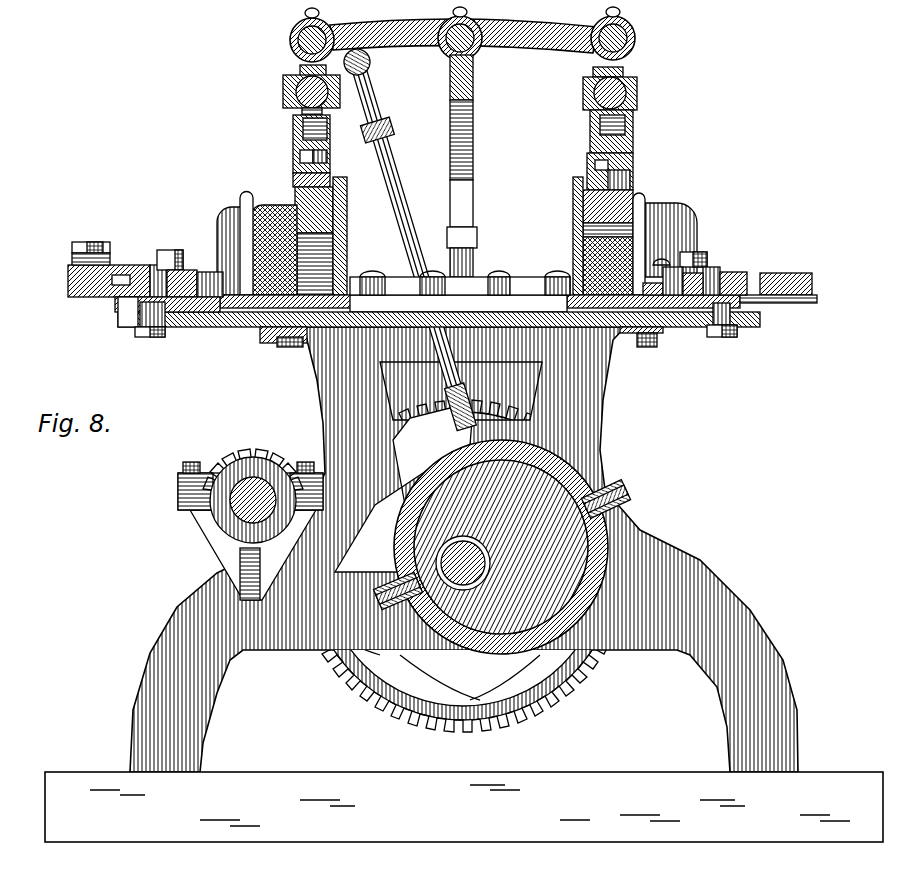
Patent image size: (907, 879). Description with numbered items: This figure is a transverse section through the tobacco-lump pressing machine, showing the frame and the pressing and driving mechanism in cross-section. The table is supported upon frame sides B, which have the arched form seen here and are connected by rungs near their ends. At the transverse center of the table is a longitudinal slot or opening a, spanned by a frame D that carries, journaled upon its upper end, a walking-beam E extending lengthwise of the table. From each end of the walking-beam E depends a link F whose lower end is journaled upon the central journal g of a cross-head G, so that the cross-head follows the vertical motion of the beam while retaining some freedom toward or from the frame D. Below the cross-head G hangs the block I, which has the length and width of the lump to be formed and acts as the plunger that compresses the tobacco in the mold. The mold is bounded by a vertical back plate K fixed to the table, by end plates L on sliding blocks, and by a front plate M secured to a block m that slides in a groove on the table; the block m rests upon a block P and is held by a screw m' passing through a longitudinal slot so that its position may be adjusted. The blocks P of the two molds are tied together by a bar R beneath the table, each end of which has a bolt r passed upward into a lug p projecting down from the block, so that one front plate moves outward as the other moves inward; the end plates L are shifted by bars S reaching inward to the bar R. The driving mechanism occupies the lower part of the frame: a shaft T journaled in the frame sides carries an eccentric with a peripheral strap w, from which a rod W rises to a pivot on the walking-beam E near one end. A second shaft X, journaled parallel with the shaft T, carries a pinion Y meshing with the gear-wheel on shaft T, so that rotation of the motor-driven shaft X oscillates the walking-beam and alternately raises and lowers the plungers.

The frame side B is at (603, 403).
The walking-beam E is at (518, 50).
The frame D is at (475, 148).
The link F is at (300, 70).
The journal of cross-head g is at (290, 97).
The cross-head G is at (633, 118).
The block (plunger) I is at (647, 182).
The back plate K is at (347, 252).
The end plate L is at (702, 240).
The front plate M is at (250, 206).
The rod W is at (405, 232).
The slot or opening a is at (500, 318).
The bar R is at (248, 318).
The bar S is at (268, 344).
The block m is at (442, 272).
The screw m' is at (443, 250).
The block P is at (203, 272).
The lug p is at (120, 309).
The bolt r is at (142, 337).
The shaft T is at (440, 560).
The peripheral strap w is at (582, 474).
The second shaft X is at (286, 470).
The pinion Y is at (243, 456).